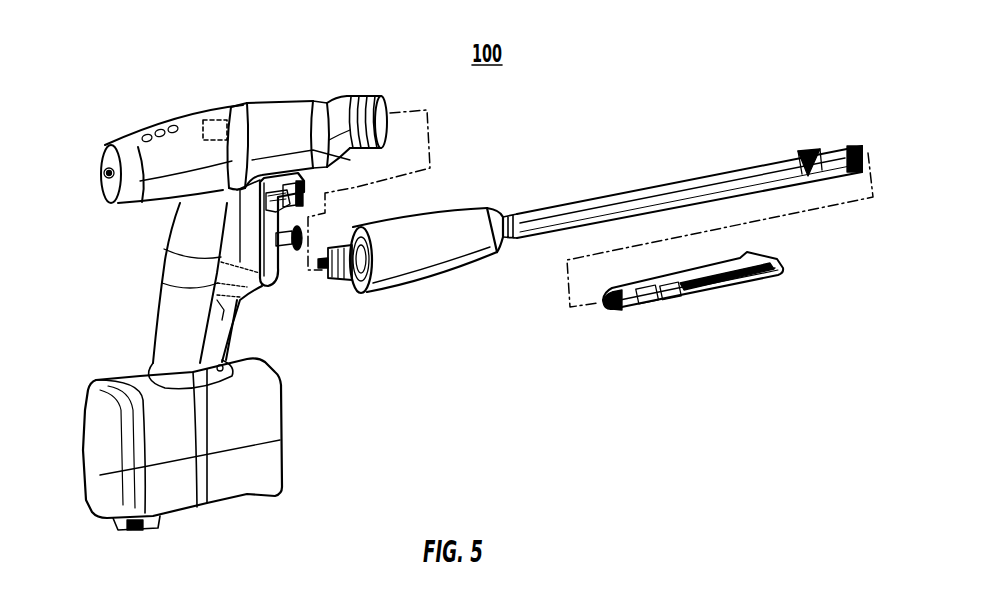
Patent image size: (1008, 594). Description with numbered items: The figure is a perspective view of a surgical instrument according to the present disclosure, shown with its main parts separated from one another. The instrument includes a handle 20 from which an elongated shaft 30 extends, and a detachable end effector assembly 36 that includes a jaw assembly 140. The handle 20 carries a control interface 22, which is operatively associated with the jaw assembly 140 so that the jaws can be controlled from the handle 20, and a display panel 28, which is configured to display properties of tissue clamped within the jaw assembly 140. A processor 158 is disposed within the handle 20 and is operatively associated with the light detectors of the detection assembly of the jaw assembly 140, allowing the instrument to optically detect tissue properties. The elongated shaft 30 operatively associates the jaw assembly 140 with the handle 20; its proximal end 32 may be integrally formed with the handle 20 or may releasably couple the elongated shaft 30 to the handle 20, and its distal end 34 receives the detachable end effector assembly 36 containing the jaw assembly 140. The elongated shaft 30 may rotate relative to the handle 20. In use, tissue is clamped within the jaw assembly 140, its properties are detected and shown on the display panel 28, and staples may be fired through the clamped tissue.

The handle 20 is at (311, 76).
The control interface 22 is at (293, 258).
The display panel 28 is at (156, 126).
The elongated shaft 30 is at (523, 200).
The proximal end 32 is at (334, 243).
The distal end 34 is at (838, 146).
The detachable end effector assembly 36 is at (643, 304).
The jaw assembly 140 is at (707, 291).
The processor 158 is at (228, 110).